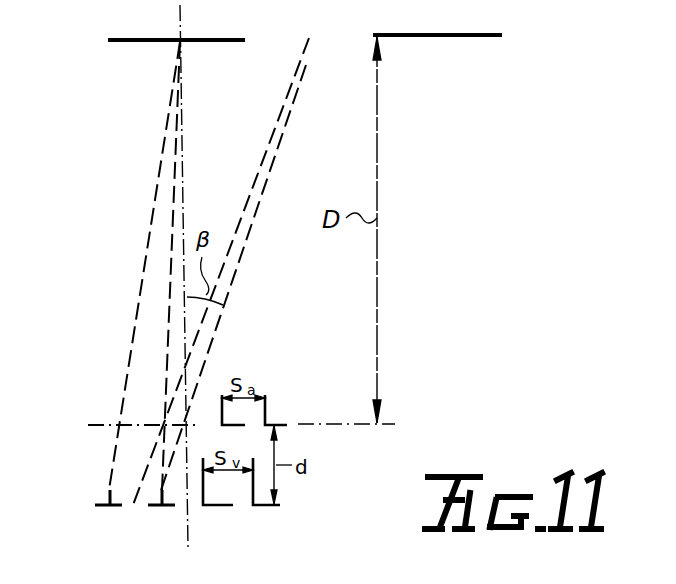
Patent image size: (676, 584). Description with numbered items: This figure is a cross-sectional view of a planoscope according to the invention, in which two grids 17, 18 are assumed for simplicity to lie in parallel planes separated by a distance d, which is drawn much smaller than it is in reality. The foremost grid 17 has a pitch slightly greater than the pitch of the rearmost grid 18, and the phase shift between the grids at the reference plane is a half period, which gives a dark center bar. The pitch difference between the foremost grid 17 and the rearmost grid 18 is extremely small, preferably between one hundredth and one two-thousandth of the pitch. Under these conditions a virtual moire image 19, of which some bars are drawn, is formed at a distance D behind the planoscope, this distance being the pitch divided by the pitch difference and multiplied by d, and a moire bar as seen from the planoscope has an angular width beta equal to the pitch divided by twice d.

The virtual moire image 19 is at (236, 40).
The rearmost grid 18 is at (270, 423).
The foremost grid 17 is at (265, 506).